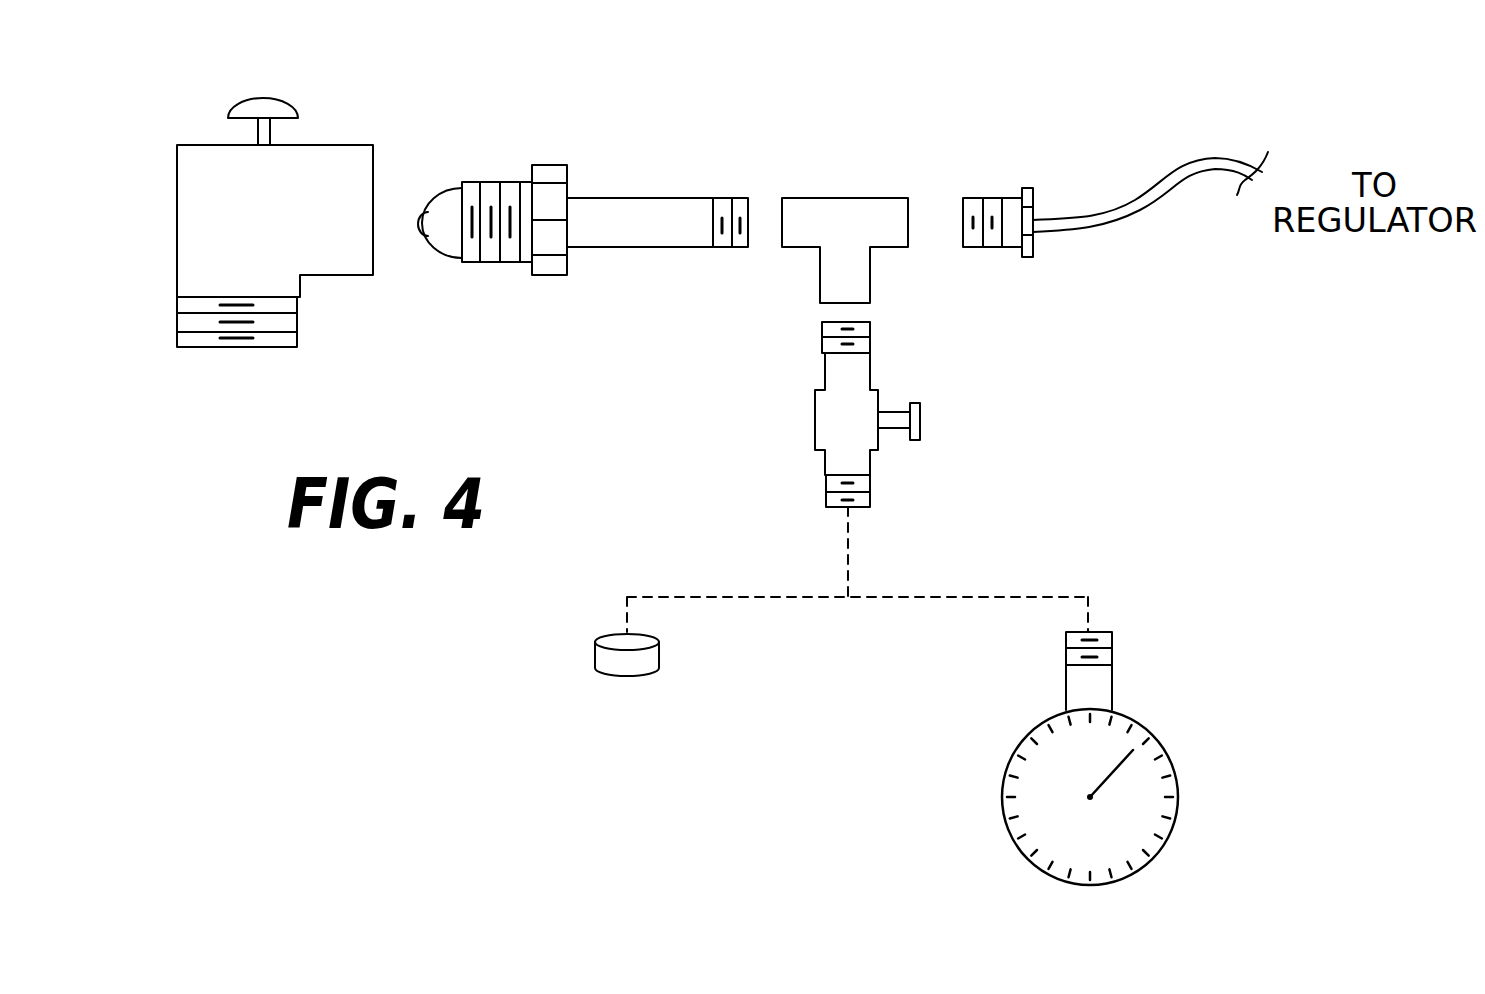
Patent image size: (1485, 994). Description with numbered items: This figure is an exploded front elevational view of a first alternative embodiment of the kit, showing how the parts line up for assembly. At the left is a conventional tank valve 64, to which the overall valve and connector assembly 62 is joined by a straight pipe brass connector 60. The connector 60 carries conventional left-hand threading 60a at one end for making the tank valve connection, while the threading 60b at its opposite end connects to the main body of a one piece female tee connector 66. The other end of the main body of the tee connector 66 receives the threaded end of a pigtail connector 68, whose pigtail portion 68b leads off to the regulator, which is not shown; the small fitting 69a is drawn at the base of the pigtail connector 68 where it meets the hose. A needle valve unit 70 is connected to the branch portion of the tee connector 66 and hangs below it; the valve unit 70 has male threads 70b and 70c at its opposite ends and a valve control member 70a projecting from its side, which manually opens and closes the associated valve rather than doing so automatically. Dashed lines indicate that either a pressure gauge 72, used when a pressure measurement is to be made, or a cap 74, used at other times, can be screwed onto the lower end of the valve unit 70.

The straight pipe brass connector 60 is at (599, 186).
The left-hand threading 60a is at (500, 180).
The threading 60b is at (742, 197).
The valve and connector assembly 62 is at (843, 141).
The tank valve 64 is at (308, 157).
The one piece female tee connector 66 is at (863, 197).
The pigtail connector 68 is at (1115, 203).
The pigtail portion 68b is at (1195, 165).
The hose connector 69a is at (1010, 248).
The needle valve unit 70 is at (889, 415).
The valve control member 70a is at (923, 423).
The male threads 70b is at (822, 343).
The male threads 70c is at (870, 493).
The pressure gauge 72 is at (1162, 747).
The cap 74 is at (642, 675).